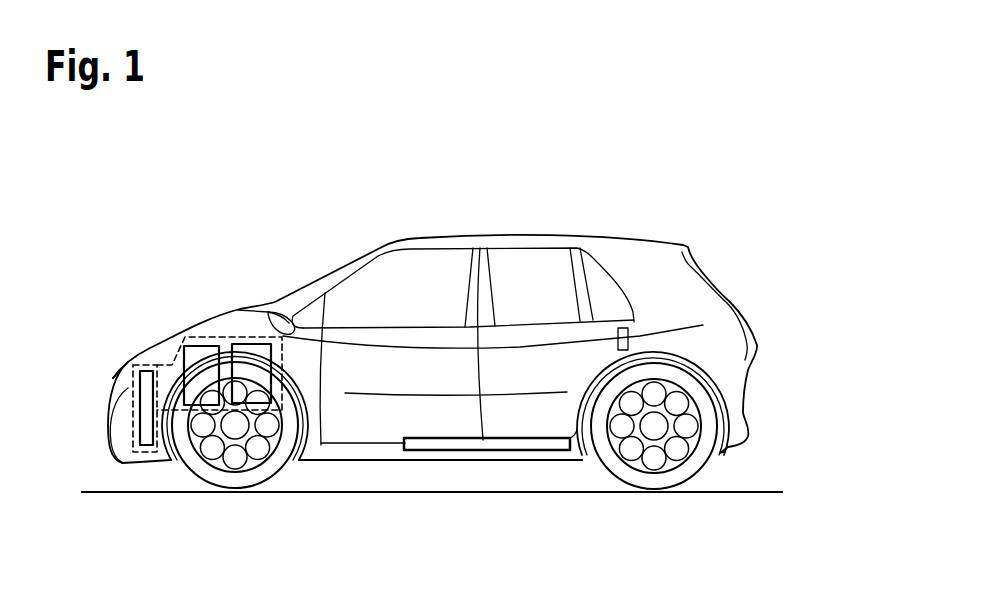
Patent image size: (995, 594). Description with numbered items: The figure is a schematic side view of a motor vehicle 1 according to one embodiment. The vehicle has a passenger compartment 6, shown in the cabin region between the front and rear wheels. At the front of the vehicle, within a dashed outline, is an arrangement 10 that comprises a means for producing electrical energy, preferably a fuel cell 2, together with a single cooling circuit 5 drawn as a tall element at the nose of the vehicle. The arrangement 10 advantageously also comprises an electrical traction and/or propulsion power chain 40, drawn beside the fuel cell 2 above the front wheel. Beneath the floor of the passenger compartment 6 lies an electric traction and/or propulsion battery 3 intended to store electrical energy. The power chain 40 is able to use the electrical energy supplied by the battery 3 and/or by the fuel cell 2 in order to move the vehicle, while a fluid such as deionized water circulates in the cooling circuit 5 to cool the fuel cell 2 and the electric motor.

The motor vehicle 1 is at (434, 218).
The fuel cell 2 is at (203, 352).
The electric traction and/or propulsion battery 3 is at (508, 451).
The single cooling circuit 5 is at (145, 370).
The passenger compartment 6 is at (529, 307).
The arrangement 10 is at (167, 378).
The electrical traction and/or propulsion power chain 40 is at (246, 350).